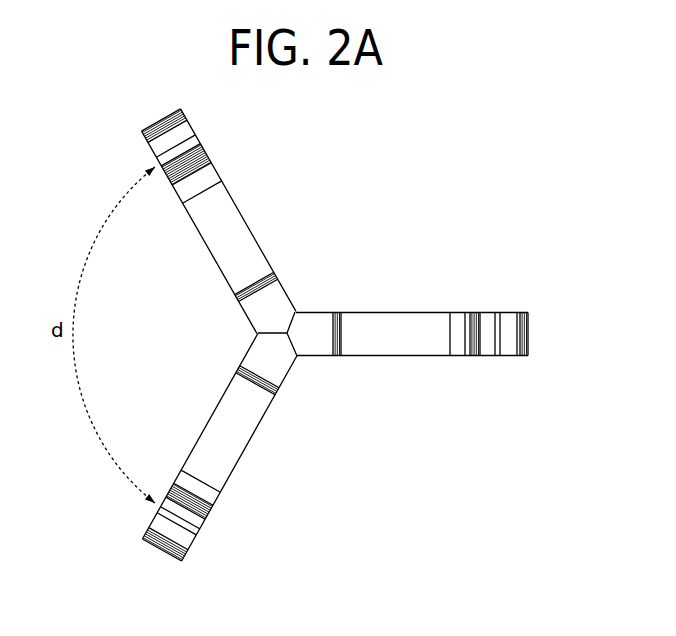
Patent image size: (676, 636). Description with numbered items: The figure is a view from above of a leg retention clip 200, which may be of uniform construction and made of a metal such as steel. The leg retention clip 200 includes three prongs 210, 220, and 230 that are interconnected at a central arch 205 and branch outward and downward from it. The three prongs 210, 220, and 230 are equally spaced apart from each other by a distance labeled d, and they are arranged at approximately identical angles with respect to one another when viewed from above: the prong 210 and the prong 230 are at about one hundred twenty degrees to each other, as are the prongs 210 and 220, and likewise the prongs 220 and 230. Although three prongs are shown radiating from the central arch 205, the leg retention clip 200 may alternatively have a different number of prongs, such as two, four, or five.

The leg retention clip 200 is at (566, 174).
The central arch 205 is at (289, 322).
The prong 210 is at (233, 203).
The prong 220 is at (377, 347).
The prong 230 is at (240, 450).